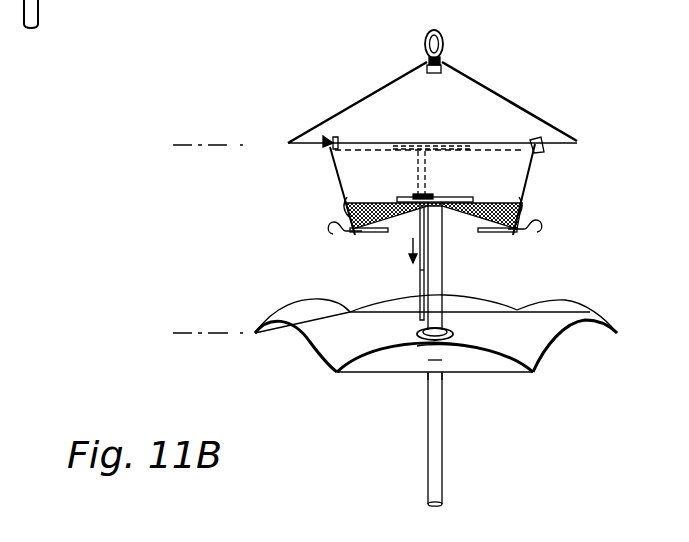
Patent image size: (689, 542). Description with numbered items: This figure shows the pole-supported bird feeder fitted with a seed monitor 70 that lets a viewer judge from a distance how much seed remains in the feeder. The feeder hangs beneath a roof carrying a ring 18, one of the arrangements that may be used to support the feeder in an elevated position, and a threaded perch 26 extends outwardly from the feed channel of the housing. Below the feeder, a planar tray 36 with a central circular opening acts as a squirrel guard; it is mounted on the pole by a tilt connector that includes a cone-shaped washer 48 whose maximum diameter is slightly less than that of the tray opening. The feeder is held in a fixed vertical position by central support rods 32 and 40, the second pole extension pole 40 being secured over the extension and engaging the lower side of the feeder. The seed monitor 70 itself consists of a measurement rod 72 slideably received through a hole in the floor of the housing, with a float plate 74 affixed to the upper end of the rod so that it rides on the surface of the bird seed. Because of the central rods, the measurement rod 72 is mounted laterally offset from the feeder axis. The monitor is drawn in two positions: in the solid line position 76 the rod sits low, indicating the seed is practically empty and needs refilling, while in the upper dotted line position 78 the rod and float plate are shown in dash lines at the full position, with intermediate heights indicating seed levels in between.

The ring 18 is at (443, 42).
The float plate 74 is at (415, 197).
The seed monitor 70 is at (487, 178).
The upper dotted line position 78 is at (189, 151).
The threaded perch 26 is at (540, 229).
The measurement rod 72 is at (421, 282).
The cone-shaped washer 48 is at (443, 330).
The planar tray 36 is at (492, 318).
The solid line position 76 is at (183, 334).
The second pole extension pole 40 is at (437, 313).
The central support rod 32 is at (445, 460).